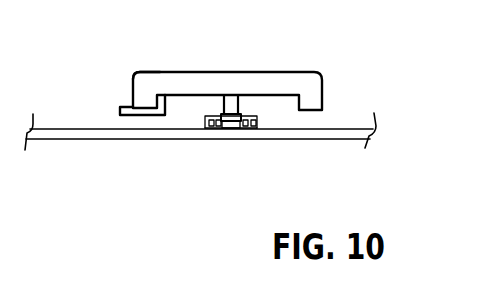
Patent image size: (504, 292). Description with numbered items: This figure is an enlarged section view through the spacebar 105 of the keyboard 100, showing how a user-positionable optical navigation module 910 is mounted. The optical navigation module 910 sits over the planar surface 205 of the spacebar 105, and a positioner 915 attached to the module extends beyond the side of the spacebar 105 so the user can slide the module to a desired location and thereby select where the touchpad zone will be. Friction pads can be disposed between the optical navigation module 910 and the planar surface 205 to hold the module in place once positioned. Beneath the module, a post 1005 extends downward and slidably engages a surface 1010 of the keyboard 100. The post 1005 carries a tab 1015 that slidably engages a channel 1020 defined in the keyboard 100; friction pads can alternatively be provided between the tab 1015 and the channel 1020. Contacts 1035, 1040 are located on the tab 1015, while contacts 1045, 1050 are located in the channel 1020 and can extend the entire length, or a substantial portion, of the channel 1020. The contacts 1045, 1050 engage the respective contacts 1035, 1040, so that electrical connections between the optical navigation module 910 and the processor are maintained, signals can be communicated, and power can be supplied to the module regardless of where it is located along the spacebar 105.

The keyboard 100 is at (78, 139).
The spacebar 105 is at (133, 86).
The planar surface 205 is at (183, 72).
The optical navigation module 910 is at (238, 108).
The positioner 915 is at (121, 106).
The post 1005 is at (238, 115).
The surface 1010 is at (122, 139).
The tab 1015 is at (228, 128).
The channel 1020 is at (234, 128).
The contact 1035 is at (241, 129).
The contact 1040 is at (221, 128).
The contact 1045 is at (255, 129).
The contact 1050 is at (210, 128).